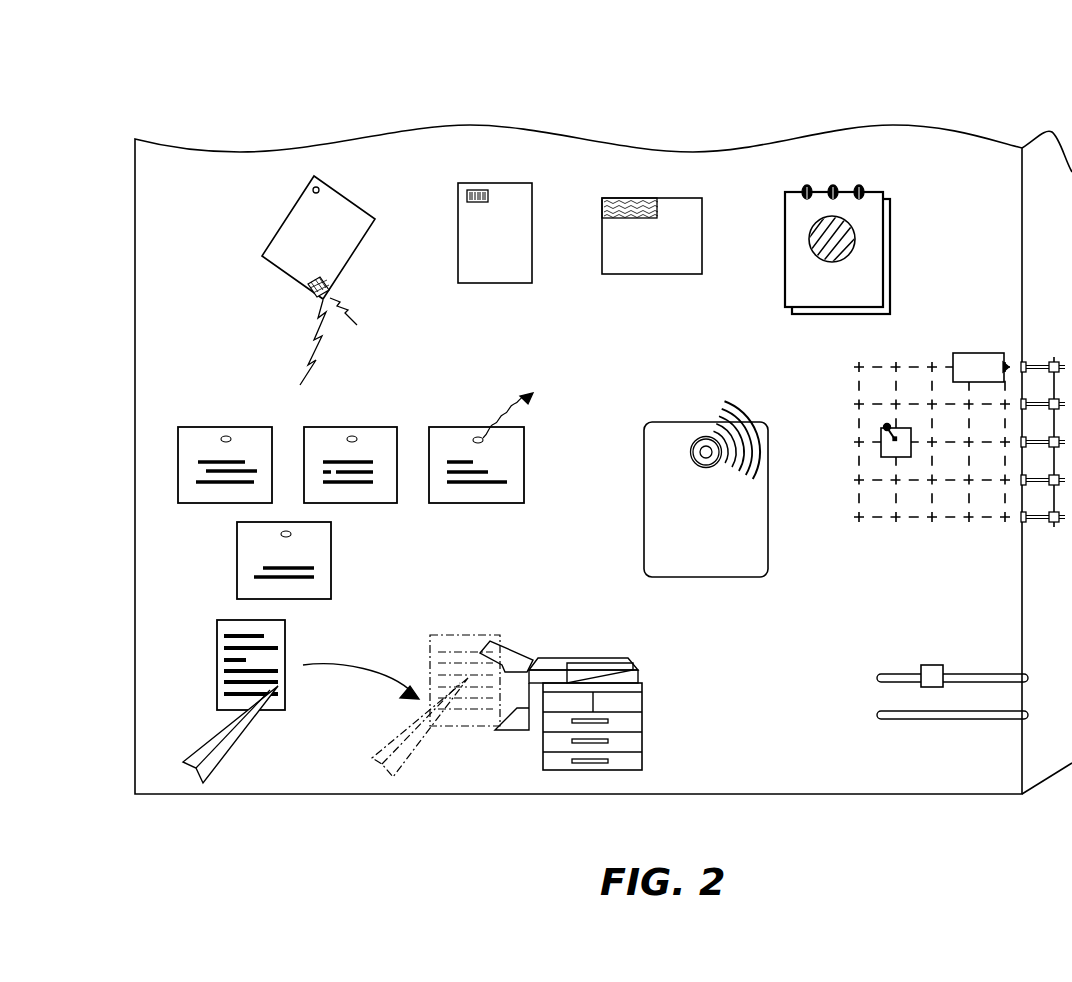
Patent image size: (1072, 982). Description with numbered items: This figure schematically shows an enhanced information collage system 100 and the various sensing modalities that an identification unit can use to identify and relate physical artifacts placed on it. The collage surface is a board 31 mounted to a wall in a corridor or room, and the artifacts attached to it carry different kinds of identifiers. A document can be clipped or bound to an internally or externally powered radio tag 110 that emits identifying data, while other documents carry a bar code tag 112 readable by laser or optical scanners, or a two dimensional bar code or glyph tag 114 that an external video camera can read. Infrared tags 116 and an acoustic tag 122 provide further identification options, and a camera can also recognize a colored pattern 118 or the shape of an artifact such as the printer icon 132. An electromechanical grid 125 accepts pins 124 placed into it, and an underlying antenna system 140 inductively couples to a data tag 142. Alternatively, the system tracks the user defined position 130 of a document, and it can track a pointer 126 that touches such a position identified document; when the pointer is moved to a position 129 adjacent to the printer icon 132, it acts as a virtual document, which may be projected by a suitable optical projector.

The information collage system 100 is at (116, 90).
The board 31 is at (153, 218).
The radio tag 110 is at (312, 295).
The bar code tag 112 is at (466, 195).
The glyph tag 114 is at (604, 206).
The infrared tags 116 is at (221, 439).
The colored pattern 118 is at (853, 247).
The acoustic tag 122 is at (692, 443).
The pins 124 is at (882, 432).
The electromechanical grid 125 is at (915, 365).
The pointer 126 is at (238, 737).
The position adjacent to printer icon 129 is at (450, 744).
The user defined position 130 is at (217, 650).
The printer icon 132 is at (600, 658).
The antenna system 140 is at (910, 683).
The data tag 142 is at (927, 663).